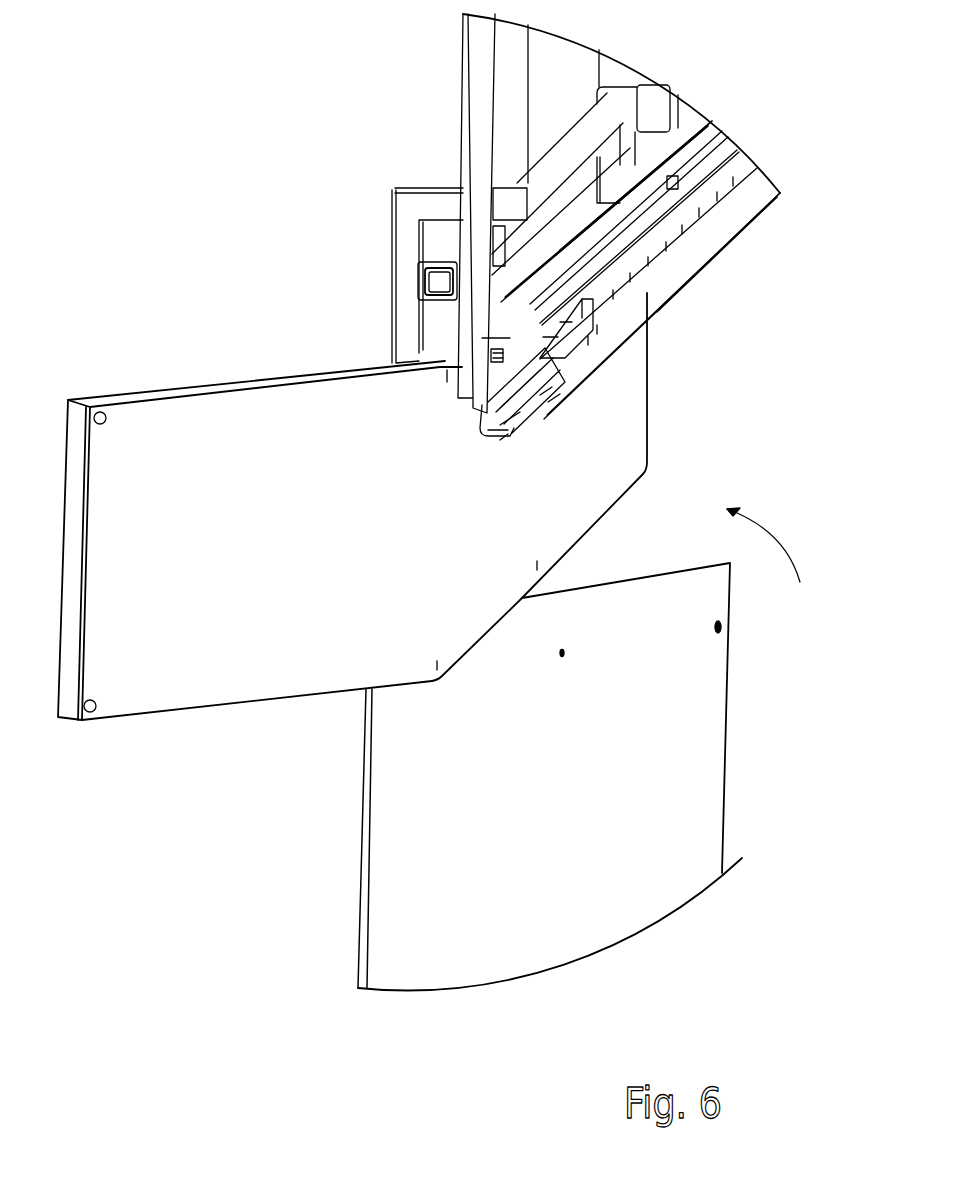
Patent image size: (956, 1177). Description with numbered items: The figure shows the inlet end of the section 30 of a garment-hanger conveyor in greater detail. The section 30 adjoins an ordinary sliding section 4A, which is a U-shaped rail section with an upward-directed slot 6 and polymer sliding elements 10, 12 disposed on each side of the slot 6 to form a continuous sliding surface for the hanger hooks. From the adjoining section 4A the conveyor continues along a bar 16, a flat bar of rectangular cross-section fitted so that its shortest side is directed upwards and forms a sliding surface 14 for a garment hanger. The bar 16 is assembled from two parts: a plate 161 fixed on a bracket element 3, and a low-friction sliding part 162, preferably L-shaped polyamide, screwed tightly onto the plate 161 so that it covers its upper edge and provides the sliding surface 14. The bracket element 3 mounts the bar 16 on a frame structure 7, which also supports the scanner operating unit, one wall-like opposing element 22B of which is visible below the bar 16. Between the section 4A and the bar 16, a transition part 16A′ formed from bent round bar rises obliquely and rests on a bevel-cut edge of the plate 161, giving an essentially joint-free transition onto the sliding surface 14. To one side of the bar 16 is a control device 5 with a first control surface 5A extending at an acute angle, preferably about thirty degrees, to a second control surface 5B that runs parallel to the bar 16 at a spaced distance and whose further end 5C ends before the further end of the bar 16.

The frame structure 7 is at (463, 101).
The bracket element 3 is at (510, 338).
The control device 5 is at (205, 378).
The first control surface 5A is at (175, 670).
The second control surface 5B is at (482, 600).
The further end of control surface 5C is at (648, 428).
The sliding part 162 is at (725, 187).
The plate 161 is at (713, 230).
The bar 16 is at (663, 247).
The sliding surface 14 is at (613, 276).
The transition part 16A′ is at (572, 332).
The sliding element 10 is at (483, 408).
The sliding element 12 is at (544, 418).
The slot 6 is at (528, 430).
The sliding section 4A is at (500, 440).
The section 30 is at (772, 560).
The opposing element 22B is at (675, 757).